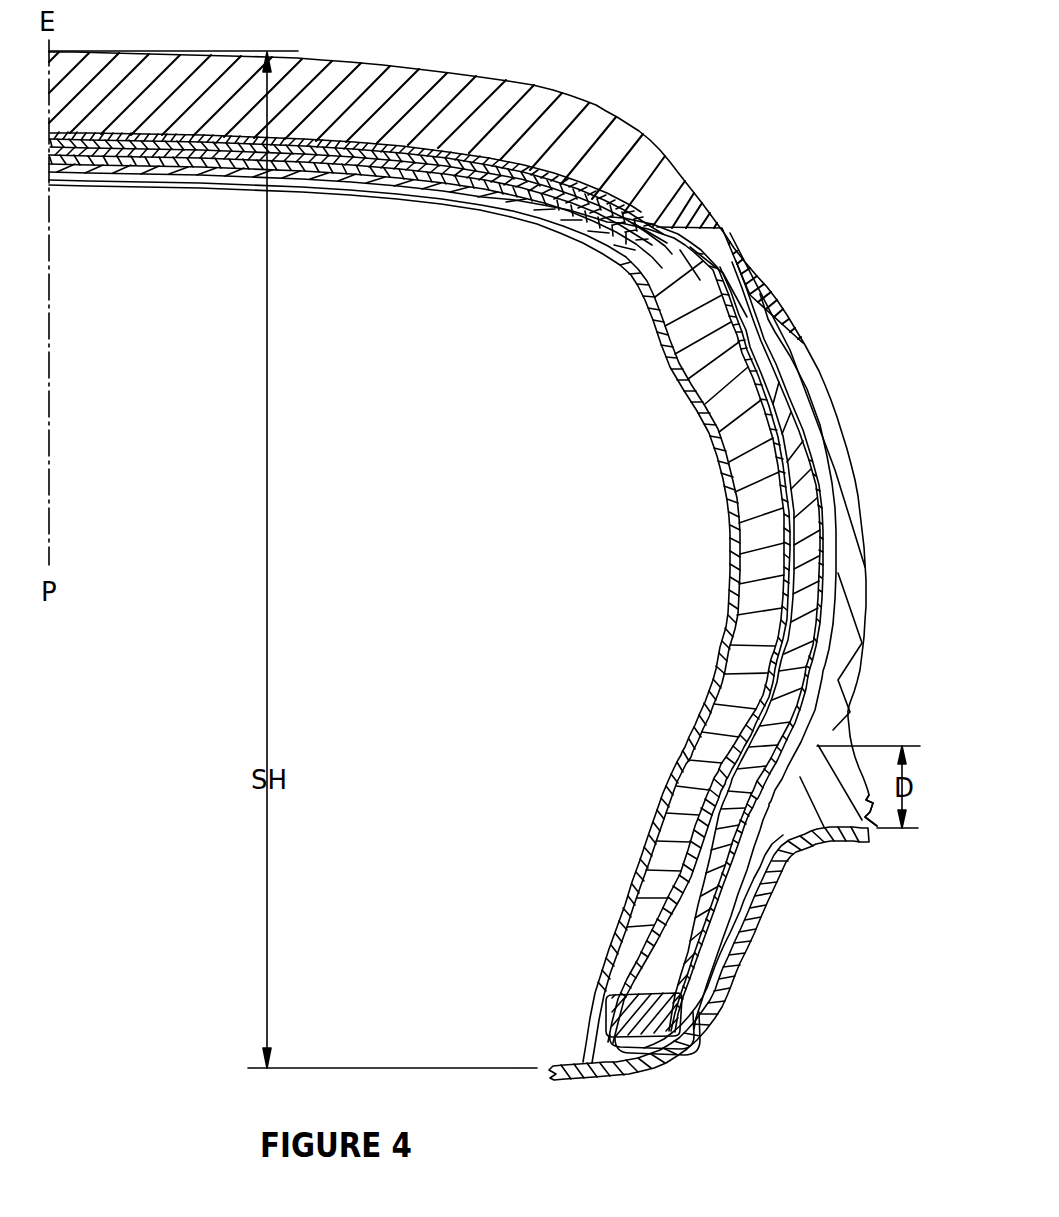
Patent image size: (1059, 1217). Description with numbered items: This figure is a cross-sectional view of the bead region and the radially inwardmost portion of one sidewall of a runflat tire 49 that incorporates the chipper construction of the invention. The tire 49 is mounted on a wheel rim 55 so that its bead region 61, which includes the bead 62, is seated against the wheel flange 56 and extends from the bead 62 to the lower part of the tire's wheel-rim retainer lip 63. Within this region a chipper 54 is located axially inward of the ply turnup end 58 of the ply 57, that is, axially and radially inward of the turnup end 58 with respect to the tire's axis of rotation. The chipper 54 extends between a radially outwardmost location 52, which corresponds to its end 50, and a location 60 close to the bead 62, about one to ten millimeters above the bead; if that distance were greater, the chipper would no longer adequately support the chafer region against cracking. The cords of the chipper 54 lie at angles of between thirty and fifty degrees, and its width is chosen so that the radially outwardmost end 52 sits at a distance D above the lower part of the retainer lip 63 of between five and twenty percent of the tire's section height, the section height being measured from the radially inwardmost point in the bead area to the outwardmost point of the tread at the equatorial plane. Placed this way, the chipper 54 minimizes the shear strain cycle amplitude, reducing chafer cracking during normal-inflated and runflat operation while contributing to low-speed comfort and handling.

The runflat tire 49 is at (655, 104).
The end 50 is at (720, 737).
The radially outermost portion 52 is at (820, 726).
The chipper 54 is at (727, 808).
The wheel rim 55 is at (730, 960).
The wheel flange 56 is at (823, 837).
The ply 57 is at (832, 537).
The ply turnup end 58 is at (840, 575).
The location 60 is at (637, 947).
The bead region 61 is at (620, 883).
The bead 62 is at (697, 1047).
The wheel-rim retainer lip 63 is at (825, 803).